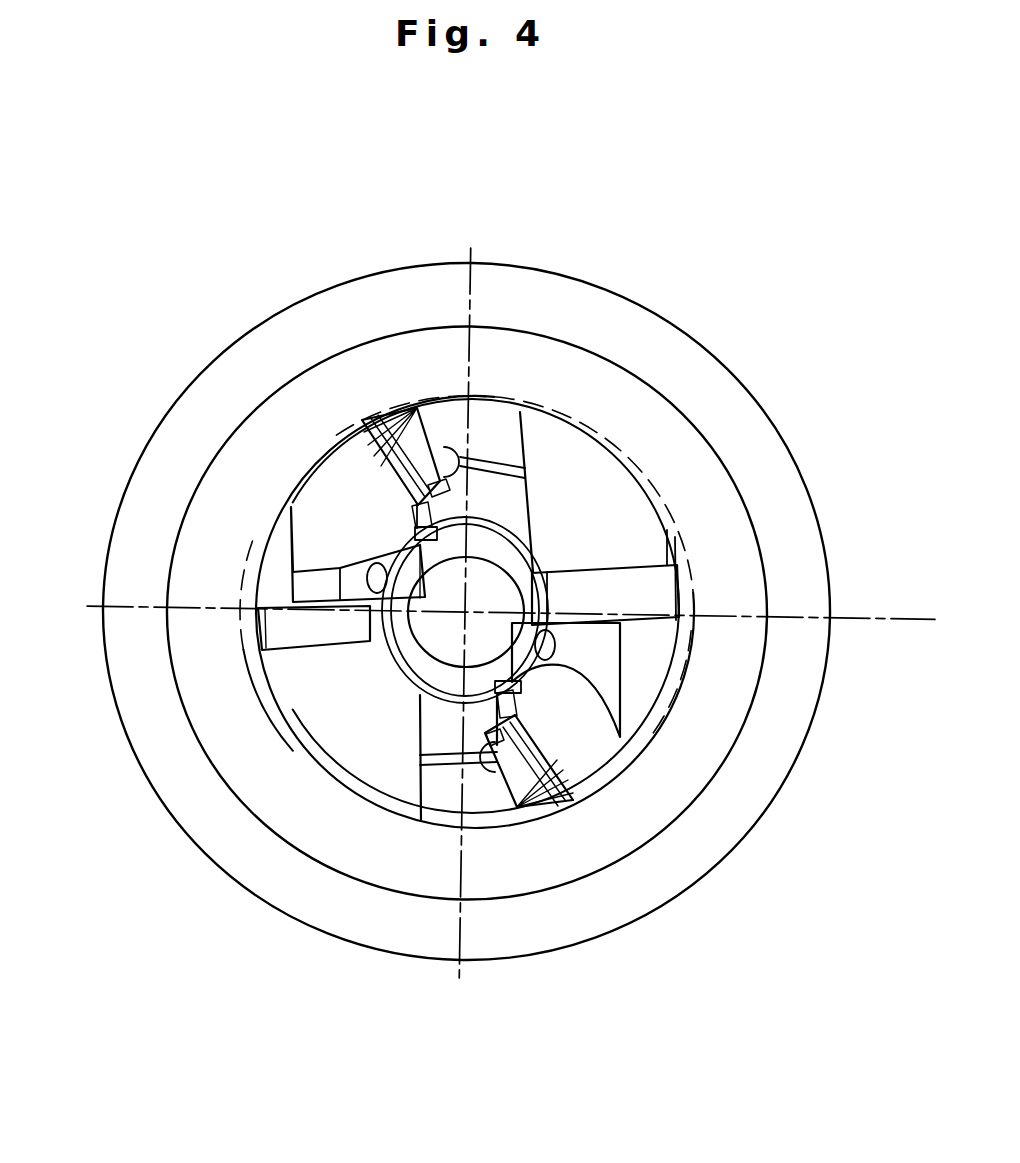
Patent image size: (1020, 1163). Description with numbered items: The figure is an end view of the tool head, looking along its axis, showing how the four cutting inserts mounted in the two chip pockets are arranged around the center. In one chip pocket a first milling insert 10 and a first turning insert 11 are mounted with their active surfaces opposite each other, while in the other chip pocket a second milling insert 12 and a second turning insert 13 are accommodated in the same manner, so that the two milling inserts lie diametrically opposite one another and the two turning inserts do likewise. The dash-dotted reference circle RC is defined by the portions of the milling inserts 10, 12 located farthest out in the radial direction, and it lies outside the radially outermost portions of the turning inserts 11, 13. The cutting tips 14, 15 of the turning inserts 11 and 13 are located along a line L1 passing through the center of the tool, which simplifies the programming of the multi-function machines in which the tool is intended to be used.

The first milling insert 10 is at (560, 757).
The first turning insert 11 is at (647, 623).
The second milling insert 12 is at (383, 477).
The second turning insert 13 is at (278, 601).
The cutting tip 14 is at (695, 621).
The cutting tip 15 is at (247, 608).
The reference circle RC is at (606, 440).
The line L1 is at (786, 619).